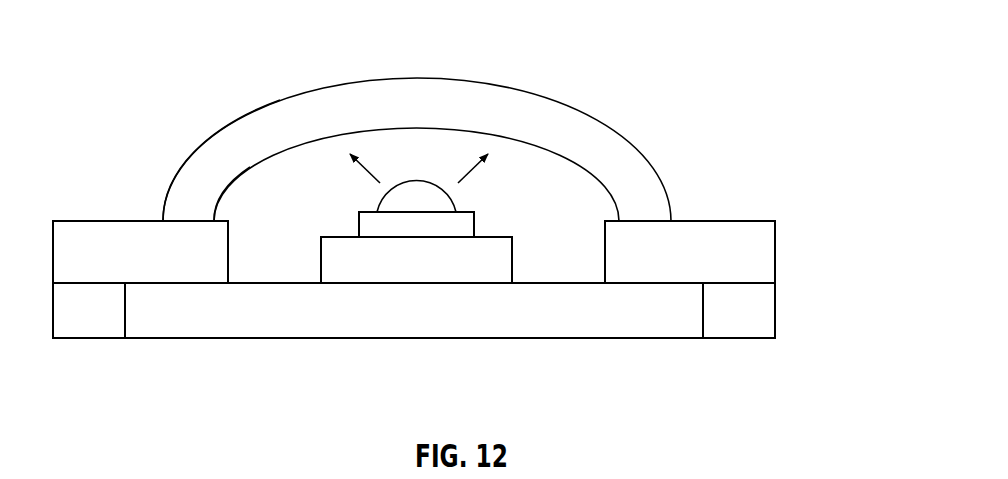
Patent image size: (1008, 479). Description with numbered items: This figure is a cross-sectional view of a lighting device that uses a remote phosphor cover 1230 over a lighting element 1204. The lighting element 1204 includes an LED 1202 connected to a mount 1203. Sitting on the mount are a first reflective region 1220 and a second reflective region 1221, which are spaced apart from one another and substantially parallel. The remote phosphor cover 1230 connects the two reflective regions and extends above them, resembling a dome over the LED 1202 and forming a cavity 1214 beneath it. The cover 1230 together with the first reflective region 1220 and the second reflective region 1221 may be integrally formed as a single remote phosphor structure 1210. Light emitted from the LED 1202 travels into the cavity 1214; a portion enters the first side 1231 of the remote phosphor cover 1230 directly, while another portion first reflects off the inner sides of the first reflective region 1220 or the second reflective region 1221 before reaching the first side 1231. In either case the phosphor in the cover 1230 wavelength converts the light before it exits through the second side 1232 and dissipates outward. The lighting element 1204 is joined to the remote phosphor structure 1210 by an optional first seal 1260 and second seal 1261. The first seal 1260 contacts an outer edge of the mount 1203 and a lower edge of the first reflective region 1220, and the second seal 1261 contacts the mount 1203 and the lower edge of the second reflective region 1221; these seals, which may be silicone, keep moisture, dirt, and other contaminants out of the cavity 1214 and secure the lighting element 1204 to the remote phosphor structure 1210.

The LED 1202 is at (378, 267).
The mount 1203 is at (487, 320).
The lighting element 1204 is at (254, 346).
The remote phosphor structure 1210 is at (535, 149).
The cavity 1214 is at (543, 165).
The first reflective region 1220 is at (169, 263).
The second reflective region 1221 is at (719, 263).
The remote phosphor cover 1230 is at (430, 93).
The first side 1231 is at (250, 167).
The second side 1232 is at (280, 100).
The first seal 1260 is at (85, 326).
The second seal 1261 is at (742, 323).